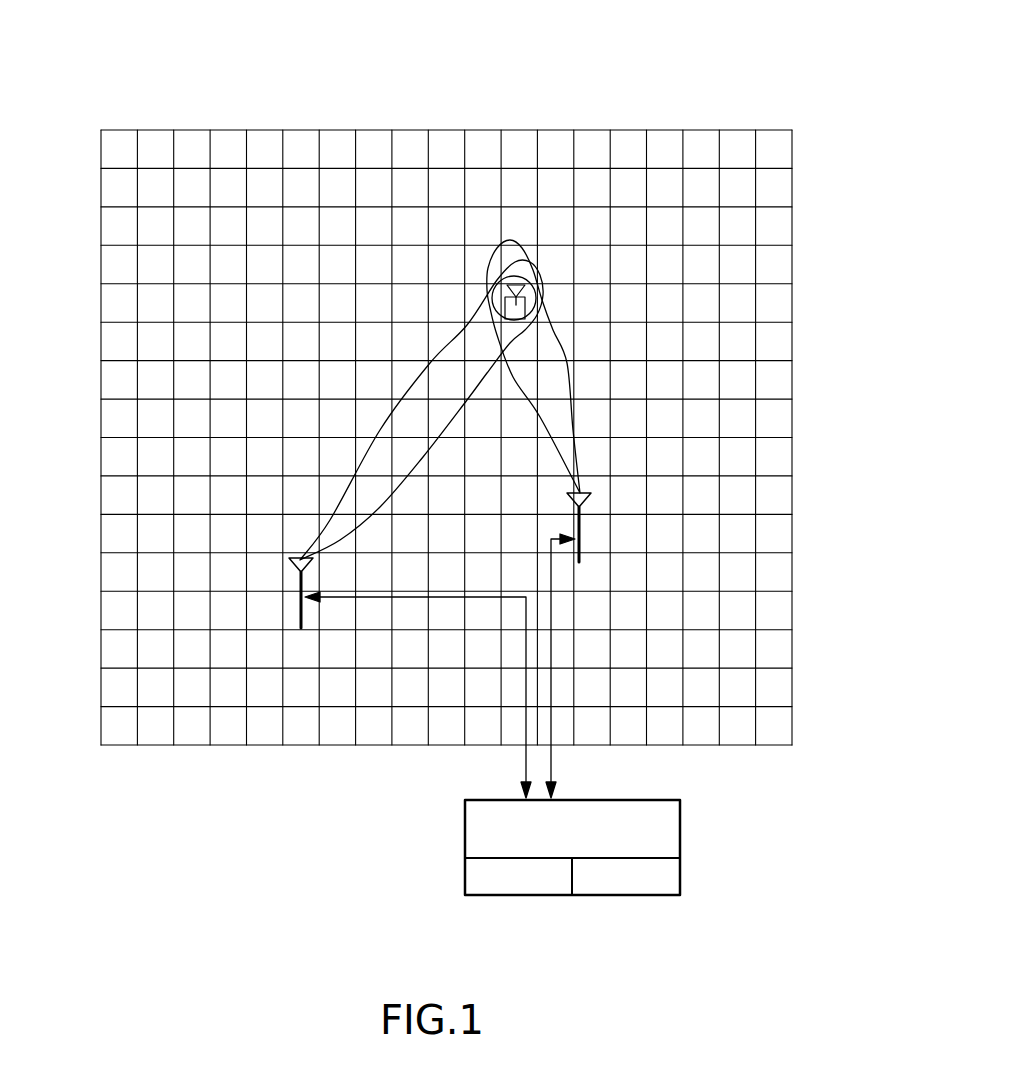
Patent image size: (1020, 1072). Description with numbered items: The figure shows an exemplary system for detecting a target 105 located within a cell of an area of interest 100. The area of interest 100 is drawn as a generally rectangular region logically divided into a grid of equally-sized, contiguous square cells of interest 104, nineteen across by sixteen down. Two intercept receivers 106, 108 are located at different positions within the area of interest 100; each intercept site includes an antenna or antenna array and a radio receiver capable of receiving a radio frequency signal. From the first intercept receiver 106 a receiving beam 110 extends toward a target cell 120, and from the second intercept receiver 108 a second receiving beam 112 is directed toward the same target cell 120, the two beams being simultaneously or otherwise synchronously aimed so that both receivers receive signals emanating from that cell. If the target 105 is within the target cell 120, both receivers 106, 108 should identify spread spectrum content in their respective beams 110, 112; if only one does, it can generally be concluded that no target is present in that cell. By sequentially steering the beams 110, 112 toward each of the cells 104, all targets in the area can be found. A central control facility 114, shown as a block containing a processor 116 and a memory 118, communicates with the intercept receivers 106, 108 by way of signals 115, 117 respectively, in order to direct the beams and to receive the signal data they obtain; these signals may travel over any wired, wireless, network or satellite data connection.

The area of interest 100 is at (784, 81).
The cells of interest 104 is at (440, 382).
The target 105 is at (492, 200).
The intercept receiver 106 is at (304, 685).
The intercept receiver 108 is at (660, 639).
The receiving beam 110 is at (421, 297).
The receiving beam 112 is at (668, 366).
The central control facility 114 is at (610, 847).
The signal 115 is at (418, 695).
The processor 116 is at (522, 906).
The signal 117 is at (600, 666).
The memory 118 is at (628, 905).
The target cell 120 is at (516, 187).